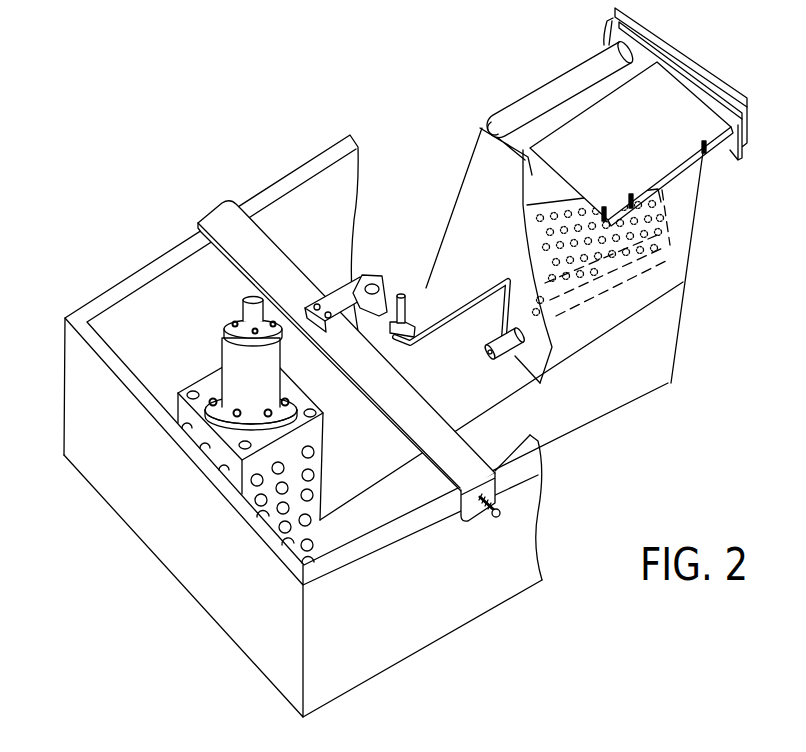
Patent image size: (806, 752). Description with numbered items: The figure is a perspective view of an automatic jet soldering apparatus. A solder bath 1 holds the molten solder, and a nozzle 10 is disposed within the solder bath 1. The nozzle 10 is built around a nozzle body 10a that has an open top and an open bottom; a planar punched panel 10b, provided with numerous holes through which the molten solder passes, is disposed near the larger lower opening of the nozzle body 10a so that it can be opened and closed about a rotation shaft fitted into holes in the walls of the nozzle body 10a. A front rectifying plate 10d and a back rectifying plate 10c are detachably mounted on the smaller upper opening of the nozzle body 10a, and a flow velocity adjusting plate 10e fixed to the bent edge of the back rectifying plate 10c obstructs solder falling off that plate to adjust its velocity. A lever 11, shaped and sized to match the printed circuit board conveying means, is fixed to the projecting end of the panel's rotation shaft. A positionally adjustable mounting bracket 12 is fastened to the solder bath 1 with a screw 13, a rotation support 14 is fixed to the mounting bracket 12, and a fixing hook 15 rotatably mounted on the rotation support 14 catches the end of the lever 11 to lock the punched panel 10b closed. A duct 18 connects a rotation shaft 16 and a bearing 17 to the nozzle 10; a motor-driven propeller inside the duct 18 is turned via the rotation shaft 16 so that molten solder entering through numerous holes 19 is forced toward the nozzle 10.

The solder bath 1 is at (360, 663).
The nozzle 10 is at (710, 44).
The nozzle body 10a is at (660, 285).
The punched panel 10b is at (672, 213).
The back rectifying plate 10c is at (690, 117).
The front rectifying plate 10d is at (557, 95).
The flow velocity adjusting plate 10e is at (680, 163).
The lever 11 is at (500, 289).
The mounting bracket 12 is at (230, 215).
The screw 13 is at (497, 520).
The rotation support 14 is at (340, 302).
The fixing hook 15 is at (390, 293).
The rotation shaft 16 is at (252, 298).
The bearing 17 is at (240, 367).
The duct 18 is at (583, 412).
The holes 19 is at (222, 472).